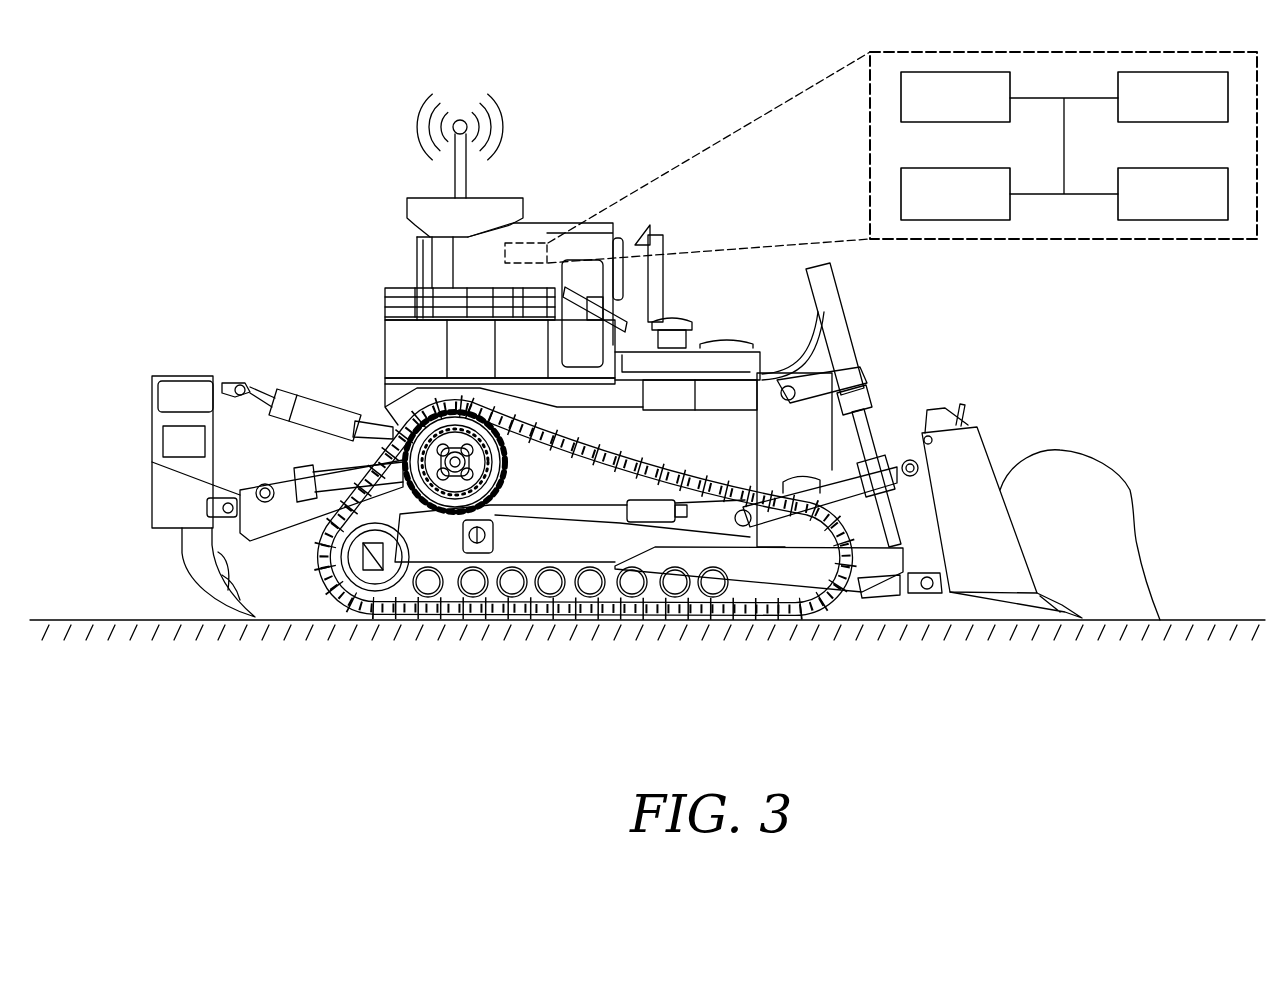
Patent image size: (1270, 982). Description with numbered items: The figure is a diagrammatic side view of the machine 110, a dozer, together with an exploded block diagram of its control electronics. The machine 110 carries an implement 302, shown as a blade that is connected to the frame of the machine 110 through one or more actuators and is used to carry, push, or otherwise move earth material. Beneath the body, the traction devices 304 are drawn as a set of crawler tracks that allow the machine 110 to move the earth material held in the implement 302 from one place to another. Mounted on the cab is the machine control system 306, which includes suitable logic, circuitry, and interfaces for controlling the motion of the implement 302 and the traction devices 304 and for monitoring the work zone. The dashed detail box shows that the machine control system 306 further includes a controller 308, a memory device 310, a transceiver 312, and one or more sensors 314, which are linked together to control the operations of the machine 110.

The machine 110 is at (228, 130).
The implement 302 is at (967, 450).
The traction devices 304 is at (572, 623).
The machine control system 306 is at (533, 248).
The controller 308 is at (955, 97).
The memory device 310 is at (955, 194).
The transceiver 312 is at (1173, 97).
The sensors 314 is at (1173, 194).